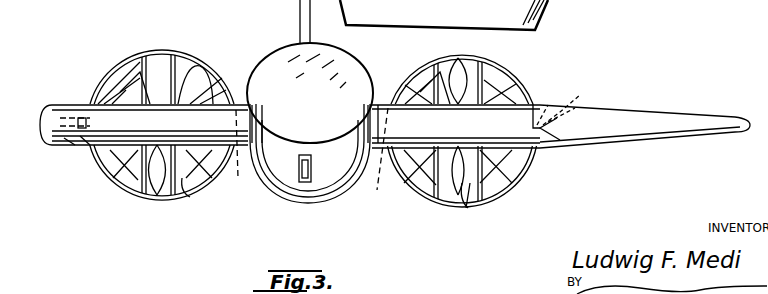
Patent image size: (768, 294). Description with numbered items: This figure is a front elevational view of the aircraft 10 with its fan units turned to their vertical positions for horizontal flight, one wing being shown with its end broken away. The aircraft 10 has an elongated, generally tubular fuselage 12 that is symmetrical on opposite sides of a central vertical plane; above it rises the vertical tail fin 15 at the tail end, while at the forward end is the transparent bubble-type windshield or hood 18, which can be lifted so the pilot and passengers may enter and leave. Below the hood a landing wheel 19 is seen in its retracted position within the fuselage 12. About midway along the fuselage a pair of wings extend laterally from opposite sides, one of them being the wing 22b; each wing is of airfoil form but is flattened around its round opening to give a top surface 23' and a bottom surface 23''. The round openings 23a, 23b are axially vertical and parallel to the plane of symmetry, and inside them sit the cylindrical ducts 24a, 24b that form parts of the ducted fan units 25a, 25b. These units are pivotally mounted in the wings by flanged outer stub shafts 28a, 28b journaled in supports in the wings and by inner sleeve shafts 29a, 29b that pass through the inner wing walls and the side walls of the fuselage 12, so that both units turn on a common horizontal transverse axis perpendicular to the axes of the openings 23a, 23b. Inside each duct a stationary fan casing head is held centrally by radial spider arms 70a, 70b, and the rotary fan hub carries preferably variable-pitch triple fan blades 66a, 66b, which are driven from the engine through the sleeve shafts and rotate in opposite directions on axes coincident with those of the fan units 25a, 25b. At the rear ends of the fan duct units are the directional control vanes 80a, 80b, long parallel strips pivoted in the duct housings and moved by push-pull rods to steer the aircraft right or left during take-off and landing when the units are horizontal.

The aircraft 10 is at (268, 32).
The fuselage 12 is at (246, 104).
The vertical tail fin 15 is at (307, 13).
The windshield or hood 18 is at (345, 74).
The landing wheel 19 is at (306, 182).
The wing 22b is at (62, 107).
The opening 23b is at (92, 102).
The bottom surface 23'' is at (49, 151).
The opening 23a is at (543, 110).
The top surface 23' is at (582, 104).
The duct 24a is at (515, 189).
The duct 24b is at (113, 192).
The ducted fan unit 25a is at (420, 62).
The ducted fan unit 25b is at (153, 50).
The stub shaft 28a is at (462, 0).
The stub shaft 28b is at (80, 140).
The sleeve shaft 29a is at (372, 160).
The sleeve shaft 29b is at (231, 156).
The fan blades 66a is at (458, 74).
The fan blades 66b is at (198, 80).
The spider arms 70a is at (514, 167).
The spider arms 70b is at (124, 70).
The directional control vane 80a is at (473, 208).
The directional control vane 80b is at (186, 184).